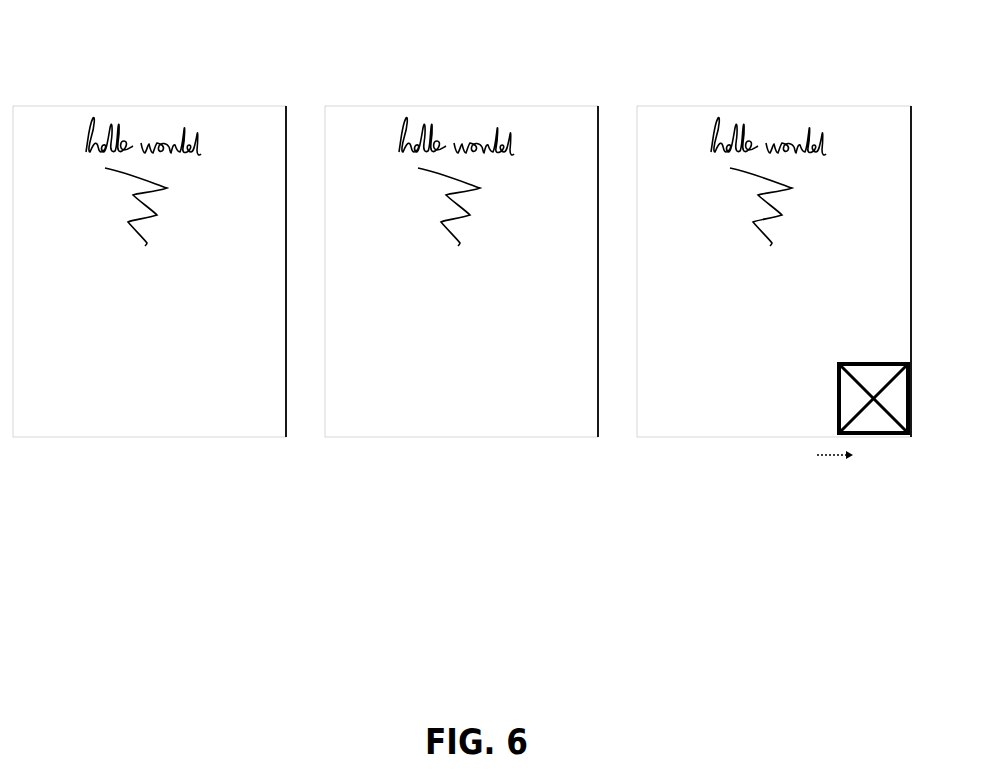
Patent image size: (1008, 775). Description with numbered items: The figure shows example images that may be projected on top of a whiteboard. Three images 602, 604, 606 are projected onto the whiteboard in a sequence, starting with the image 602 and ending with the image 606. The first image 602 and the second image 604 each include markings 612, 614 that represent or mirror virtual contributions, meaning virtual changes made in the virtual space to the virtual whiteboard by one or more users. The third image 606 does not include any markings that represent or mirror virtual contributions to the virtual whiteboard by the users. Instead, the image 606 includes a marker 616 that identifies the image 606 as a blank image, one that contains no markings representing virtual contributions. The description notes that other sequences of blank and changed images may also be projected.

The image 602 is at (167, 76).
The image 604 is at (481, 76).
The image 606 is at (794, 76).
The marking 612 is at (57, 307).
The marking 614 is at (157, 365).
The marker 616 is at (838, 402).